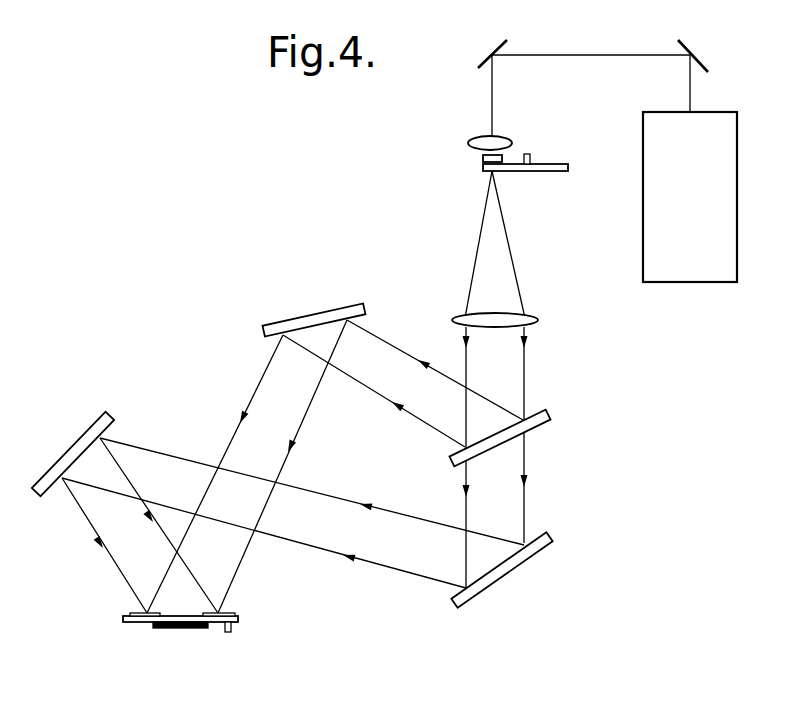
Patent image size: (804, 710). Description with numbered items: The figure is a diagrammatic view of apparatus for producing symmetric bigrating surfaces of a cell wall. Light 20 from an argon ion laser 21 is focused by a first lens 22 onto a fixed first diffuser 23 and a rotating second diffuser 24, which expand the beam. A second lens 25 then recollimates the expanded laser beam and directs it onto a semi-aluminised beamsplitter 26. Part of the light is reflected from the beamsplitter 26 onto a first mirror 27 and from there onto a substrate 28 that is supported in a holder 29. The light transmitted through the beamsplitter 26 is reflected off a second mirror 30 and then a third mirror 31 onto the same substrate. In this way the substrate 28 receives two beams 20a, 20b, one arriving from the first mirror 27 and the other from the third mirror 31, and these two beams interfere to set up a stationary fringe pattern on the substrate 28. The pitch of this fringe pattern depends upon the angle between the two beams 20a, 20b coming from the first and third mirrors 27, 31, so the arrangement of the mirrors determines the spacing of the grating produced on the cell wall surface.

The light 20 is at (602, 55).
The first beam 20a is at (255, 392).
The second beam 20b is at (83, 522).
The argon ion laser 21 is at (677, 260).
The first lens 22 is at (502, 140).
The first diffuser 23 is at (483, 158).
The second diffuser 24 is at (543, 171).
The second lens 25 is at (463, 315).
The beamsplitter 26 is at (535, 425).
The first mirror 27 is at (317, 317).
The substrate 28 is at (168, 628).
The holder 29 is at (127, 622).
The second mirror 30 is at (507, 570).
The third mirror 31 is at (68, 453).